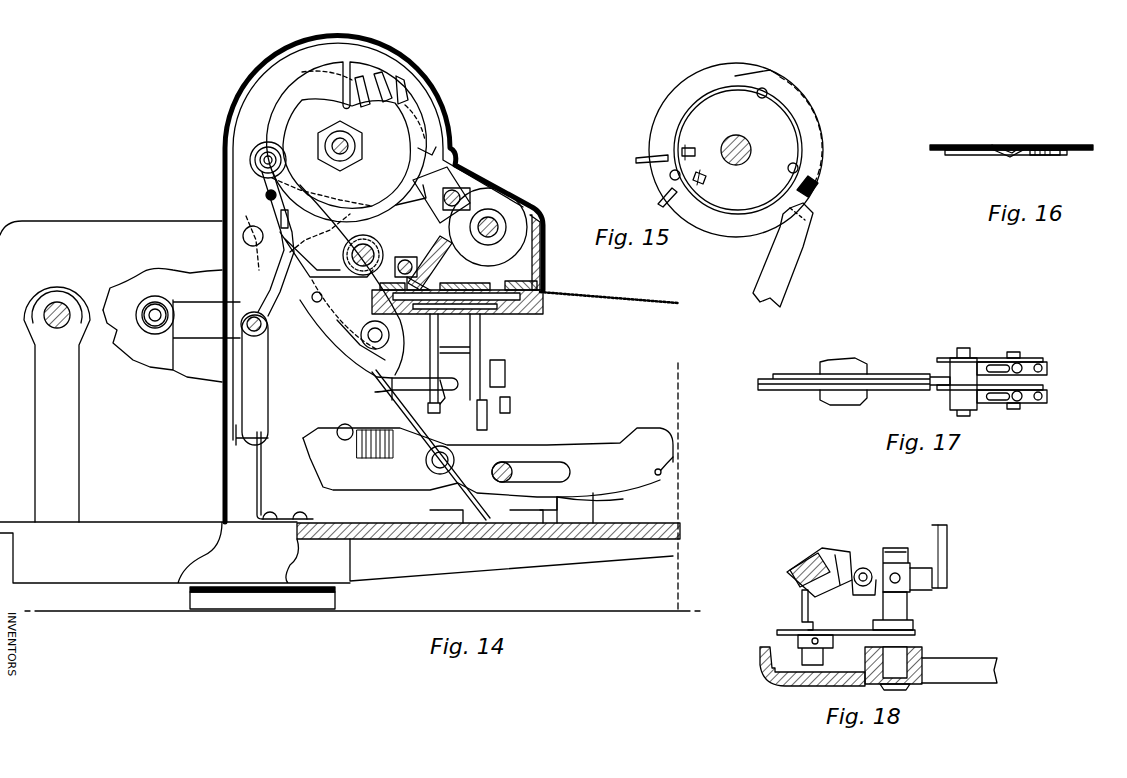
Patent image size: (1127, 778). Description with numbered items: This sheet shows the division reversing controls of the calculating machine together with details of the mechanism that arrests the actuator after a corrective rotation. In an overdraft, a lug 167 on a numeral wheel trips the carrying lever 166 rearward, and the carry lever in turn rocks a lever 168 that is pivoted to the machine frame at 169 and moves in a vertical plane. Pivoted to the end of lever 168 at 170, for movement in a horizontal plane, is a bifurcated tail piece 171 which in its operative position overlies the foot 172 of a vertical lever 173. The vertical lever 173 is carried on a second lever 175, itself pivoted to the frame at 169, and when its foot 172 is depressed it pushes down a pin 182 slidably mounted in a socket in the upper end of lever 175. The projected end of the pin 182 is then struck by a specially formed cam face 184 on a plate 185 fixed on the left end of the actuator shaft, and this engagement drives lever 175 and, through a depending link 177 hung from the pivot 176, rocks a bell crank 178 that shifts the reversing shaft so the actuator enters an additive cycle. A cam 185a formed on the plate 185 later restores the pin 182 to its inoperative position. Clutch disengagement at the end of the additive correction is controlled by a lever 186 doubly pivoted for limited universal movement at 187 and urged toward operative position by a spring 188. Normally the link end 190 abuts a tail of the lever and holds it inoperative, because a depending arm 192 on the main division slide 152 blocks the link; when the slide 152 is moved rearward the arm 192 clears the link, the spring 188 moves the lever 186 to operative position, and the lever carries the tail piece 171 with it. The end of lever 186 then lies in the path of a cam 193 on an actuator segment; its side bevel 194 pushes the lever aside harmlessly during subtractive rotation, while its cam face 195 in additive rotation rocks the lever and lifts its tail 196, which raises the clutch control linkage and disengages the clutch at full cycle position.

In FIG. 14, the main division slide 152 is at (488, 473).
In FIG. 14, the carrying lever 166 is at (438, 228).
In FIG. 14, the lug 167 is at (470, 203).
In FIG. 14, the lever 168 is at (397, 238).
In FIG. 18, the lever 168 is at (947, 543).
In FIG. 14, the pivot 169 is at (385, 212).
In FIG. 18, the pivot 169 is at (898, 548).
In FIG. 14, the pivot 170 is at (350, 255).
In FIG. 18, the pivot 170 is at (866, 566).
In FIG. 14, the bifurcated tail piece 171 is at (320, 237).
In FIG. 18, the bifurcated tail piece 171 is at (830, 552).
In FIG. 18, the foot 172 is at (802, 608).
In FIG. 14, the vertical lever 173 is at (264, 190).
In FIG. 14, the lever 175 is at (256, 212).
In FIG. 18, the lever 175 is at (852, 630).
In FIG. 14, the pivot 176 is at (245, 242).
In FIG. 14, the depending link 177 is at (272, 270).
In FIG. 14, the bell crank 178 is at (258, 446).
In FIG. 14, the pin 182 is at (259, 162).
In FIG. 18, the pin 182 is at (823, 660).
In FIG. 14, the cam face 184 is at (262, 142).
In FIG. 16, the cam face 184 is at (950, 157).
In FIG. 14, the plate 185 is at (356, 146).
In FIG. 16, the plate 185 is at (1045, 156).
In FIG. 16, the cam 185a is at (1010, 158).
In FIG. 14, the lever 186 is at (350, 360).
In FIG. 15, the lever 186 is at (782, 262).
In FIG. 14, the pivot 187 is at (390, 334).
In FIG. 14, the spring 188 is at (322, 296).
In FIG. 14, the link end 190 is at (395, 402).
In FIG. 14, the depending arm 192 is at (610, 500).
In FIG. 15, the cam 193 is at (812, 122).
In FIG. 15, the side bevel 194 is at (816, 190).
In FIG. 15, the cam face 195 is at (760, 80).
In FIG. 14, the tail 196 is at (437, 384).